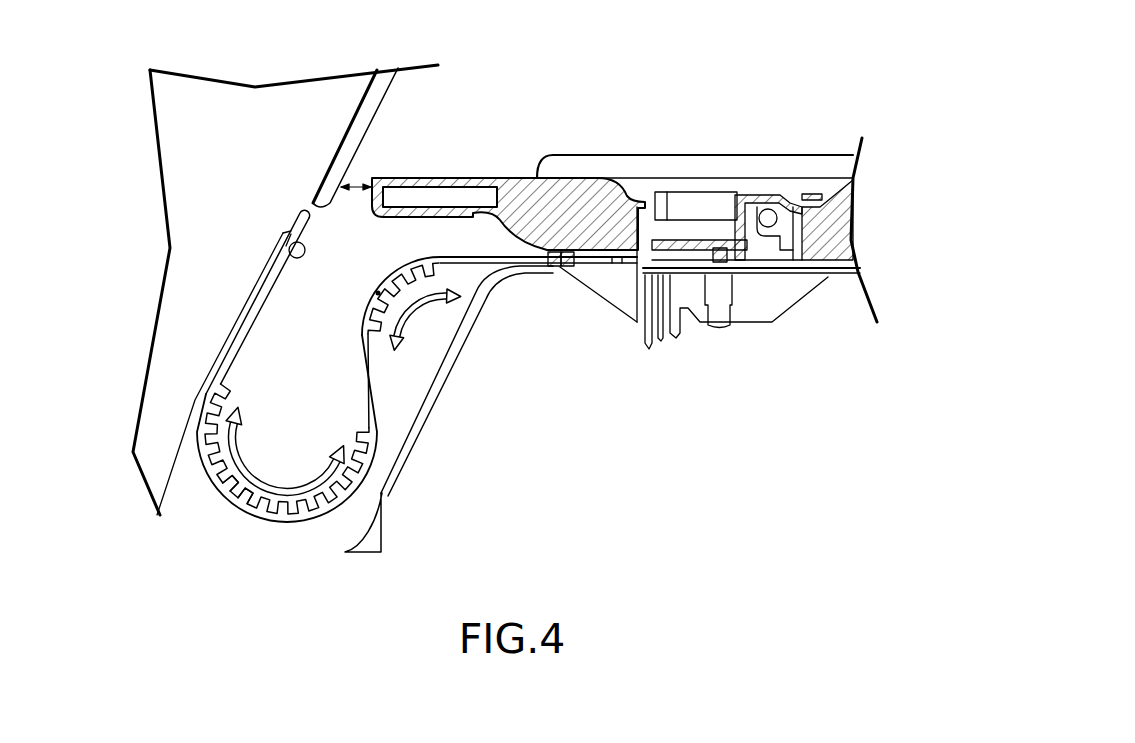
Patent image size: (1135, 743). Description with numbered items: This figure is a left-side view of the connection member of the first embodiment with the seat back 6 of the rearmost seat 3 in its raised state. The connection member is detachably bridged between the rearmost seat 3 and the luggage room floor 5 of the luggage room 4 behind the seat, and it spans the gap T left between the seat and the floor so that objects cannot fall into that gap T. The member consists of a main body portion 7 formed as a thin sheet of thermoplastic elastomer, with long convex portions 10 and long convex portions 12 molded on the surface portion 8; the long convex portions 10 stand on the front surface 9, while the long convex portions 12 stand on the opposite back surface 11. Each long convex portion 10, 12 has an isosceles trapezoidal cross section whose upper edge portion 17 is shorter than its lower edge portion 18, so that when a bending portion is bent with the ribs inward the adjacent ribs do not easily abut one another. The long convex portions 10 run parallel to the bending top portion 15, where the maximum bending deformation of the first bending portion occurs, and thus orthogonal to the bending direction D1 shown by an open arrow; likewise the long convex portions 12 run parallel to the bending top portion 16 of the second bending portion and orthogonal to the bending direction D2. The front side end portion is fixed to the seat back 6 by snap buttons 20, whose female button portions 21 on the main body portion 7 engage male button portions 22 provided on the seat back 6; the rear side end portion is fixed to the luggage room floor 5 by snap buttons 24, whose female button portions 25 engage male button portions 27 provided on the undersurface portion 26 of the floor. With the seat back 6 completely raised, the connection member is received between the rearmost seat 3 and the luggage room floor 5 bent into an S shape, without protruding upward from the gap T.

The rearmost seat 3 is at (285, 260).
The seat back 6 is at (197, 103).
The luggage room 4 is at (694, 97).
The luggage room floor 5 is at (497, 178).
The gap T is at (357, 181).
The snap buttons 20 is at (182, 206).
The female button portions 21 is at (290, 233).
The male button portions 22 is at (281, 250).
The main body portion 7 is at (214, 302).
The surface portion 8 is at (268, 301).
The front surface 9 is at (243, 357).
The back surface 11 is at (227, 357).
The long convex portions 10 is at (398, 423).
The long convex portions 12 is at (286, 433).
The bending top portion 15 is at (258, 520).
The bending top portion 16 is at (378, 293).
The upper edge portion 17 is at (240, 488).
The lower edge portion 18 is at (233, 497).
The bending direction D1 is at (273, 483).
The bending direction D2 is at (420, 318).
The snap buttons 24 is at (559, 334).
The female button portions 25 is at (558, 270).
The male button portions 27 is at (573, 270).
The undersurface portion 26 is at (617, 258).